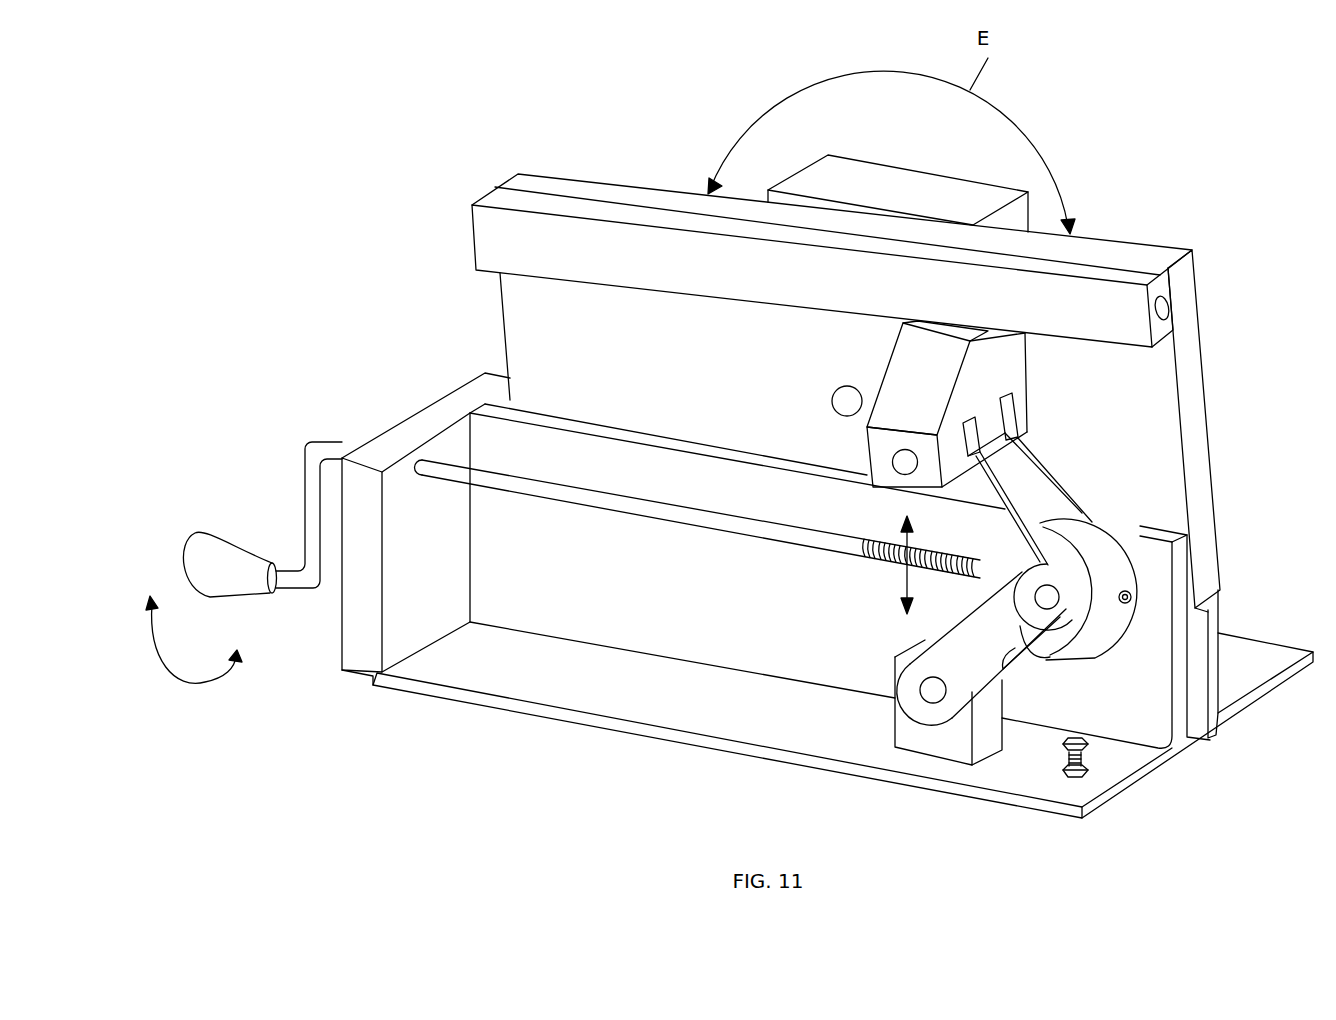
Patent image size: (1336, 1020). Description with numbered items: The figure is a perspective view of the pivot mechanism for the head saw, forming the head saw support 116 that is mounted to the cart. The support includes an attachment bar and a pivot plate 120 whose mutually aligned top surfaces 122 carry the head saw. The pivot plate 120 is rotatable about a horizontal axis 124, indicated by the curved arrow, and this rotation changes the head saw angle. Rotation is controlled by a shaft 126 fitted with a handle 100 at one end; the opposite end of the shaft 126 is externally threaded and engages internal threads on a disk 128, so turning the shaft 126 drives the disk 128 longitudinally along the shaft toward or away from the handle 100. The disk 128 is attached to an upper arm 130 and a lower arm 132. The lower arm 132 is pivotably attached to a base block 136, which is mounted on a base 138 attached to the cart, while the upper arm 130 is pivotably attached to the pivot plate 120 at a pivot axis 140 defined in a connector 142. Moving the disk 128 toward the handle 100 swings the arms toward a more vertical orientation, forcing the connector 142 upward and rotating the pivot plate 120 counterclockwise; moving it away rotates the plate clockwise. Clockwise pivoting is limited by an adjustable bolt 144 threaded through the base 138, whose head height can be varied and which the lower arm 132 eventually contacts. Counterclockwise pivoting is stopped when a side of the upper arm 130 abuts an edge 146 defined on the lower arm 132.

The handle 100 is at (217, 553).
The head saw support 116 is at (358, 178).
The pivot plate 120 is at (1203, 388).
The top surfaces 122 is at (503, 203).
The horizontal axis 124 is at (836, 394).
The shaft 126 is at (690, 518).
The disk 128 is at (1095, 540).
The upper arm 130 is at (1023, 515).
The lower arm 132 is at (907, 687).
The base block 136 is at (915, 737).
The base 138 is at (605, 688).
The pivot axis 140 is at (905, 462).
The connector 142 is at (998, 372).
The adjustable bolt 144 is at (1080, 737).
The edge 146 is at (1037, 670).